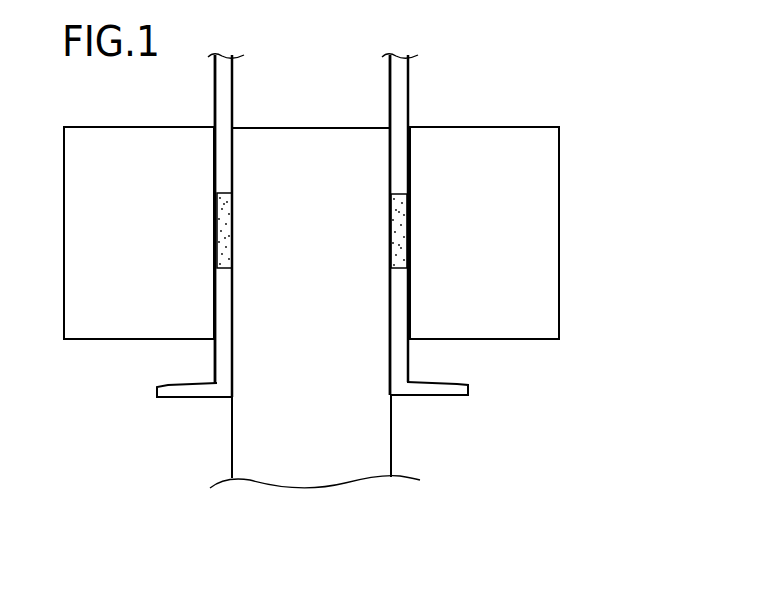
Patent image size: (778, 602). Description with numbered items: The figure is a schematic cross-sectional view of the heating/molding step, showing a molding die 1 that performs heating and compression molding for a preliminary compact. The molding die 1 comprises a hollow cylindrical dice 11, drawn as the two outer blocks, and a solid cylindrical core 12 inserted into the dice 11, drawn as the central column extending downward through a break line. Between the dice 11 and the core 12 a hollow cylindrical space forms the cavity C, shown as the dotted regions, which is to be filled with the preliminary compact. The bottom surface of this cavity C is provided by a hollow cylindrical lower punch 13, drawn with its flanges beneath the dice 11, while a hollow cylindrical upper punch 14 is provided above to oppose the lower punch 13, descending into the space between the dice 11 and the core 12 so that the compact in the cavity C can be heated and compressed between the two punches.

The molding die 1 is at (570, 238).
The dice 11 is at (547, 302).
The core 12 is at (345, 473).
The lower punch 13 is at (433, 392).
The upper punch 14 is at (402, 92).
The cavity C is at (410, 209).